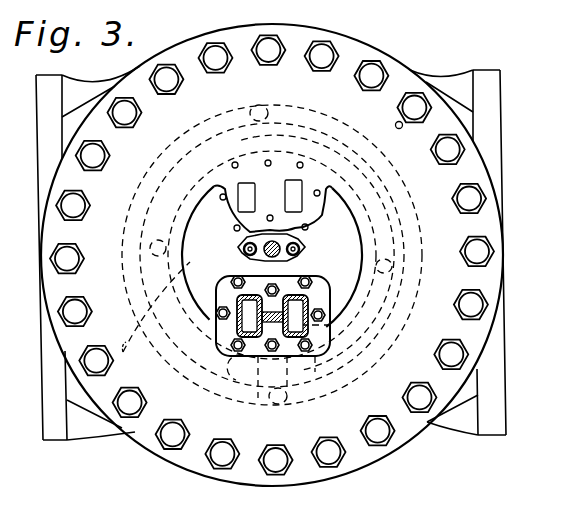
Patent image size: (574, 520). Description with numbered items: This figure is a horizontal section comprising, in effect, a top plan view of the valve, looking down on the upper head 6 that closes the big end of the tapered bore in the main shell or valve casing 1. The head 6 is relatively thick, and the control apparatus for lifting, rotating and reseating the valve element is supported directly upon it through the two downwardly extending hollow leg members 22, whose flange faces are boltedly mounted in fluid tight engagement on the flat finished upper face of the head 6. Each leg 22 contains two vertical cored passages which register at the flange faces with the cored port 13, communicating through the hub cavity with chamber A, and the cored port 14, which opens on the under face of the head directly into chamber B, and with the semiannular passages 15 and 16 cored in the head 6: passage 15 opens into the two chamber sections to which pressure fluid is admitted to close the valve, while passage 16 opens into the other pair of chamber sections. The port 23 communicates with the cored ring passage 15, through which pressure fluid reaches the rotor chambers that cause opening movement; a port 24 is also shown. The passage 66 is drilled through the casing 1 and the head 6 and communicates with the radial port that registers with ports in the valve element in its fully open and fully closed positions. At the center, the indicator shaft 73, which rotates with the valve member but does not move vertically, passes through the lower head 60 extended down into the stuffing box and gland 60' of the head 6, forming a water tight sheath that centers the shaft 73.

The main shell or valve casing 1 is at (92, 403).
The upper head 6 is at (404, 76).
The passage 66 is at (399, 129).
The passage 16 is at (418, 229).
The passage 15 is at (140, 350).
The cored port 13 is at (252, 198).
The cored port 14 is at (297, 200).
The shaft 73 is at (300, 246).
The lower head 60 is at (307, 260).
The stuffing box and gland 60' is at (237, 254).
The hollow leg member 22 is at (332, 329).
The port 23 is at (236, 284).
The port 24 is at (316, 288).